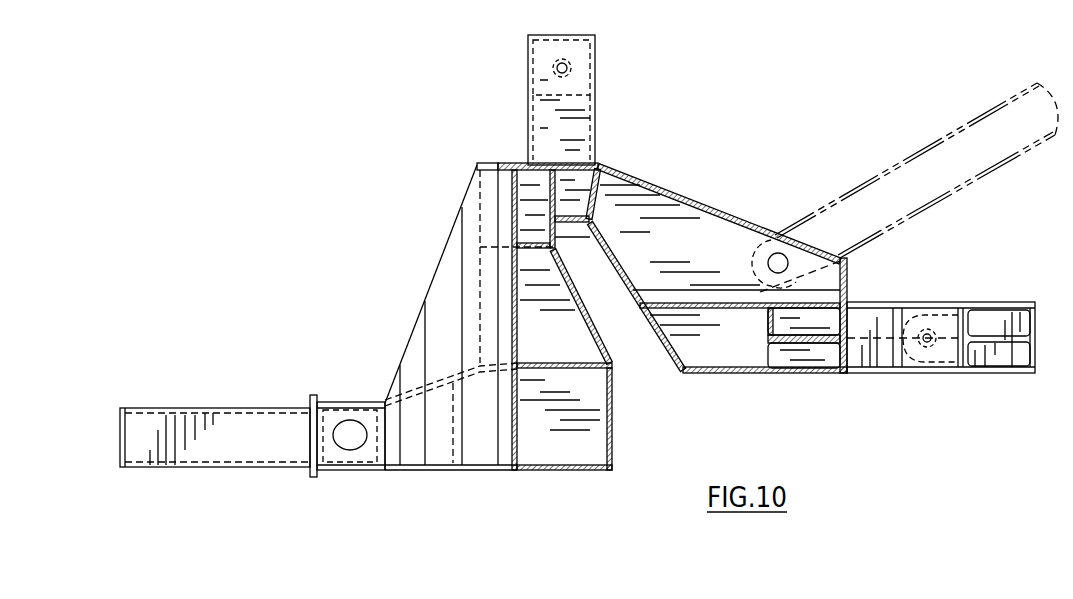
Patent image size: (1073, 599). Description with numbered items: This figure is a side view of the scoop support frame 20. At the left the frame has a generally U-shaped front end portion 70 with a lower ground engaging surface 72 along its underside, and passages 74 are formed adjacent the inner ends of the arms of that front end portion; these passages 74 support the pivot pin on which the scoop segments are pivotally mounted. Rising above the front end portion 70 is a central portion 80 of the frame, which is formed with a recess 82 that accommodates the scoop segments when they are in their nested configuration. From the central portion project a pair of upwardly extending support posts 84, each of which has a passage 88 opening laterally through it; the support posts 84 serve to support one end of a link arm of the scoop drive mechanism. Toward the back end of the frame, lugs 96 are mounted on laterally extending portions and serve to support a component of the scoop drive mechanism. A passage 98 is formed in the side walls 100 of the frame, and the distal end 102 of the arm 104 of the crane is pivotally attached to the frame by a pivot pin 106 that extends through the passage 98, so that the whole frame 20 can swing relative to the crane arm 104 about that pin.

The support frame 20 is at (388, 178).
The front end portion 70 is at (180, 408).
The ground engaging surface 72 is at (201, 467).
The passages 74 is at (350, 448).
The central portion 80 is at (618, 175).
The recess 82 is at (627, 343).
The support posts 84 is at (580, 60).
The passage 88 is at (556, 66).
The lugs 96 is at (948, 323).
The passage 98 is at (776, 253).
The side walls 100 is at (707, 220).
The distal end 102 is at (828, 203).
The arm 104 is at (965, 171).
The pivot pin 106 is at (768, 263).